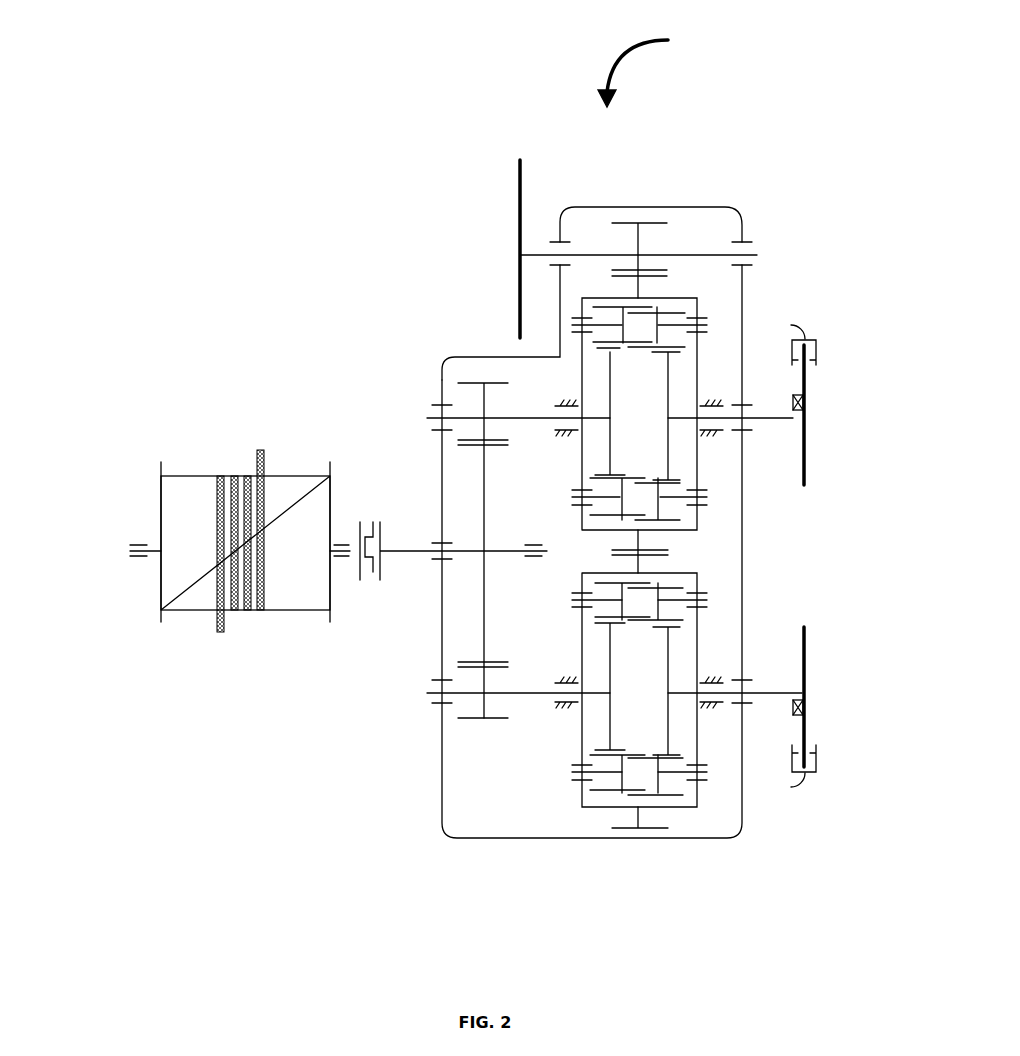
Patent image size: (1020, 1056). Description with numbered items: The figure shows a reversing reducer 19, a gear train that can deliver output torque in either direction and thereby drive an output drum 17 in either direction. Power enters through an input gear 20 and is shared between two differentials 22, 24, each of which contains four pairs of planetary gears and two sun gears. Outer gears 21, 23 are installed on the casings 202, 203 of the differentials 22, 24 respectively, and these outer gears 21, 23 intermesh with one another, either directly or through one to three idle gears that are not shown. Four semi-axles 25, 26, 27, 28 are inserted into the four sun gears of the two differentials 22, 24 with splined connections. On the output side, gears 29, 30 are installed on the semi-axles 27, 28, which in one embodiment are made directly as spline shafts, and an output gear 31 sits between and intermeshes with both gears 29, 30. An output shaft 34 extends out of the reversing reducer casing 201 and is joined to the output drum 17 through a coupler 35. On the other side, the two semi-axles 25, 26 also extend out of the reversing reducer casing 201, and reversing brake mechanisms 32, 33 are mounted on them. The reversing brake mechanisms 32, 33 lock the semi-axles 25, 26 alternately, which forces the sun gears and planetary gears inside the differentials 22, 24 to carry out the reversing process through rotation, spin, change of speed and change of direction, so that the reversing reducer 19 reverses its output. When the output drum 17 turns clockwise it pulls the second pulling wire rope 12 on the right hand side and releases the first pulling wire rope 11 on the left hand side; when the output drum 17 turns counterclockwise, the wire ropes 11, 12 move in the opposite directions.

The first pulling wire rope 11 is at (265, 450).
The second pulling wire rope 12 is at (220, 632).
The output drum 17 is at (188, 518).
The reversing reducer 19 is at (651, 65).
The input gear 20 is at (655, 223).
The reversing reducer casing 201 is at (627, 205).
The casing of the first differential 202 is at (582, 378).
The casing of the second differential 203 is at (582, 780).
The outer gear 21 is at (640, 292).
The differential 22 is at (640, 405).
The outer gear 23 is at (640, 566).
The differential 24 is at (632, 727).
The semi-axle 25 is at (793, 420).
The semi-axle 26 is at (793, 693).
The semi-axle 27 is at (542, 418).
The semi-axle 28 is at (547, 693).
The gear 29 is at (472, 382).
The gear 30 is at (468, 720).
The output gear 31 is at (483, 507).
The reversing brake mechanism 32 is at (806, 452).
The reversing brake mechanism 33 is at (806, 665).
The output shaft 34 is at (422, 552).
The coupler 35 is at (360, 585).